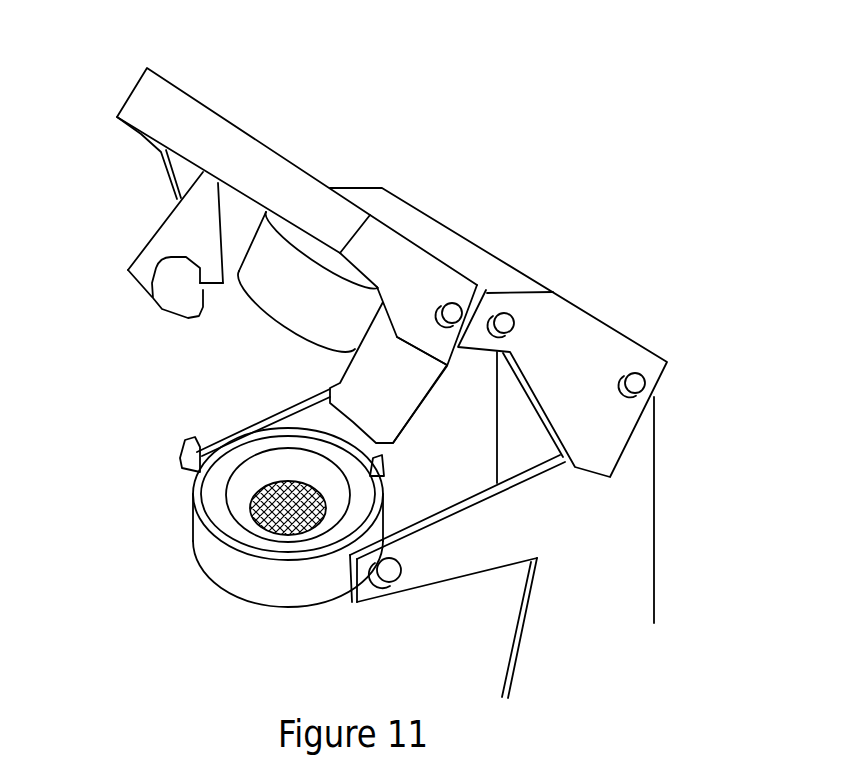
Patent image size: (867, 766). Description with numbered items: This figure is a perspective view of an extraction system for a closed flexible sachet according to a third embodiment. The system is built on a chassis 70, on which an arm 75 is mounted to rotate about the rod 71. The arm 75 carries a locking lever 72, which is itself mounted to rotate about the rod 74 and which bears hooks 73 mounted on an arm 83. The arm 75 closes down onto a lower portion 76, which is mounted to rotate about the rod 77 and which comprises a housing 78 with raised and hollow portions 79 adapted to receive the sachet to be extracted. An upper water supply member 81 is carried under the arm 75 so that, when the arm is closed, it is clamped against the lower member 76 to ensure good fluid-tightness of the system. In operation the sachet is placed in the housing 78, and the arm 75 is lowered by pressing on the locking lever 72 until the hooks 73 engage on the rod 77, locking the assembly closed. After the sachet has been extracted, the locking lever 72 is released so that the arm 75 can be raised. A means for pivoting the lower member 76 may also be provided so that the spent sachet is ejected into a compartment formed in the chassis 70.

The chassis 70 is at (604, 540).
The rod 71 is at (665, 363).
The locking lever 72 is at (237, 152).
The hooks 73 is at (178, 273).
The rod 74 is at (462, 306).
The arm 75 is at (413, 218).
The lower portion 76 is at (208, 557).
The rod 77 is at (392, 582).
The housing 78 is at (242, 492).
The raised and hollow portions 79 is at (270, 535).
The upper water supply member 81 is at (283, 286).
The arm 83 is at (170, 225).